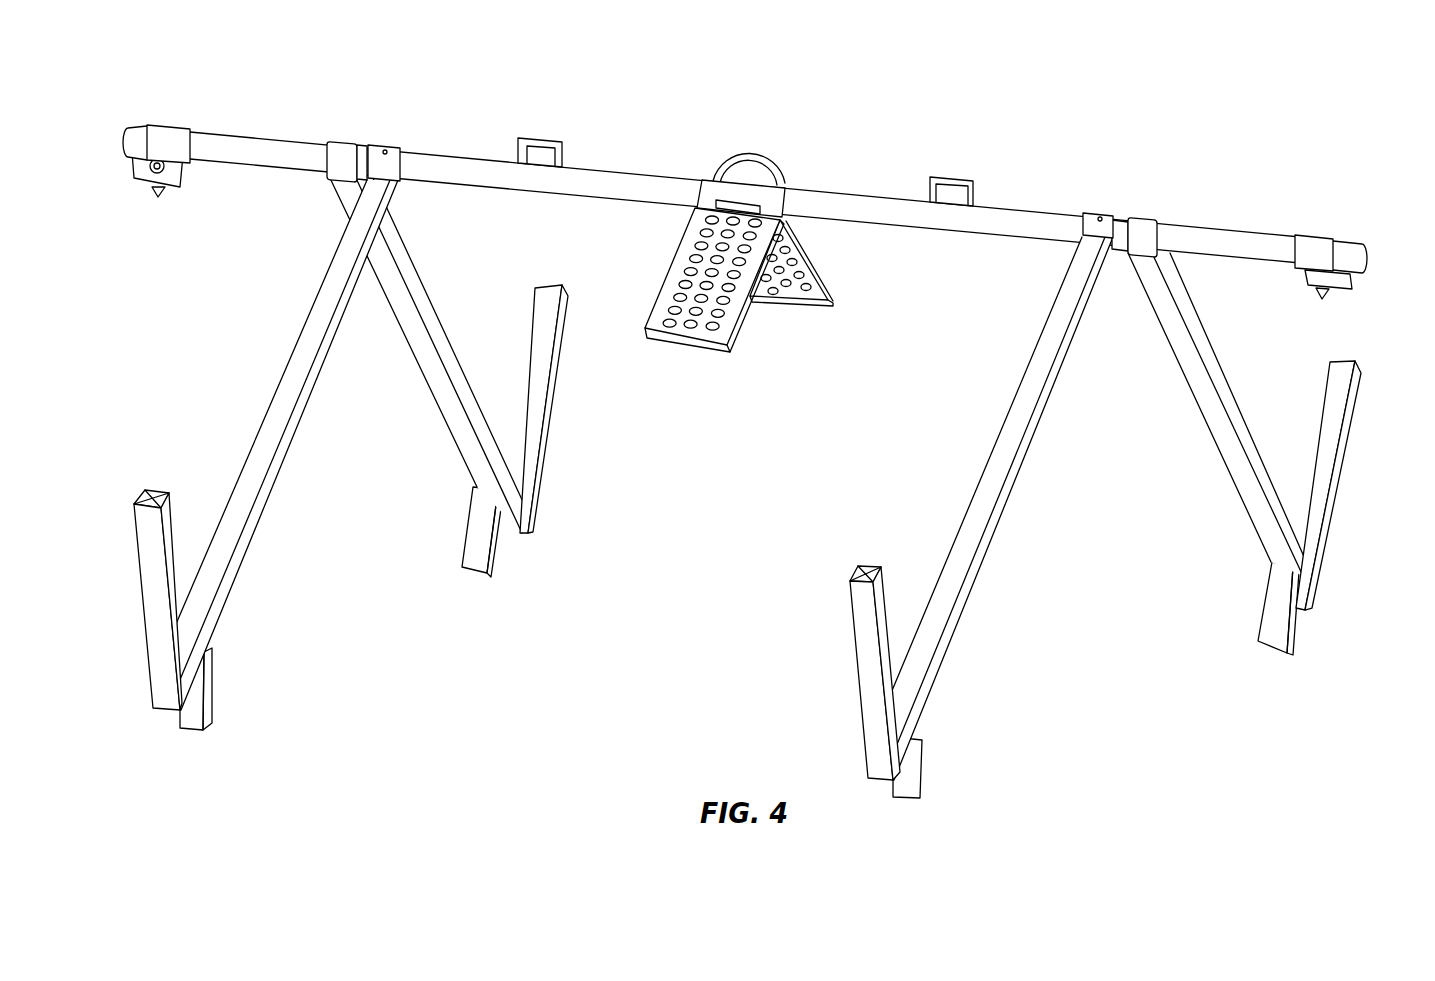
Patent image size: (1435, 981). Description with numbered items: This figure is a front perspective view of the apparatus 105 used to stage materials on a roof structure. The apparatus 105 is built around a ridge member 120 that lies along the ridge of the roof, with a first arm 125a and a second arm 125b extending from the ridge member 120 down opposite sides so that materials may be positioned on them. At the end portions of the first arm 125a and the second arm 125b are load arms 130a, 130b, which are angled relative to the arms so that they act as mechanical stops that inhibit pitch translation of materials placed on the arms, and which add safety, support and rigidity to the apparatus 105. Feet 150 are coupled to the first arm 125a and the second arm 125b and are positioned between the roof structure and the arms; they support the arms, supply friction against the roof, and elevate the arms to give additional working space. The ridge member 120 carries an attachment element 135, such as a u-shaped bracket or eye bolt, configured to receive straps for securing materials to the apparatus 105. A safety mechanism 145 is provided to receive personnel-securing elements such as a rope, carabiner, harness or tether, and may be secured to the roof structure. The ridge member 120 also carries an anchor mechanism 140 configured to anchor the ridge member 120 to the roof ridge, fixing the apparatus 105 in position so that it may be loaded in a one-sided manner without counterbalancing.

The apparatus 105 is at (1324, 68).
The ridge member 120 is at (284, 152).
The first arm 125a is at (252, 536).
The second arm 125b is at (425, 400).
The load arm 130a is at (143, 592).
The load arm 130b is at (550, 400).
The attachment element 135 is at (542, 137).
The anchor mechanism 140 is at (177, 130).
The safety mechanism 145 is at (793, 284).
The feet 150 is at (200, 697).